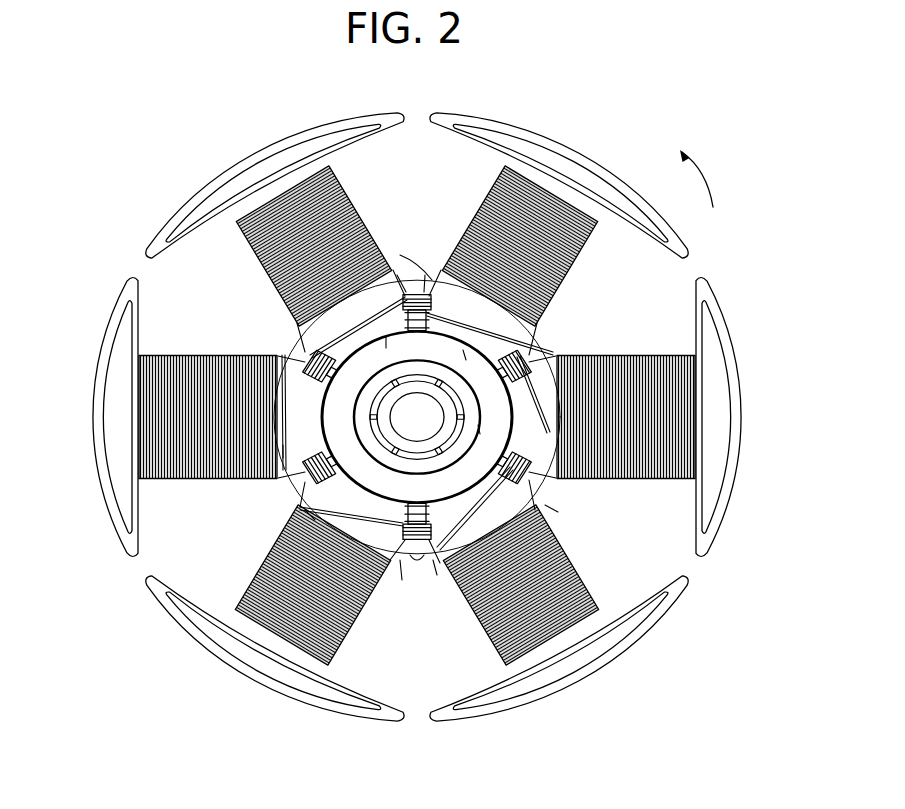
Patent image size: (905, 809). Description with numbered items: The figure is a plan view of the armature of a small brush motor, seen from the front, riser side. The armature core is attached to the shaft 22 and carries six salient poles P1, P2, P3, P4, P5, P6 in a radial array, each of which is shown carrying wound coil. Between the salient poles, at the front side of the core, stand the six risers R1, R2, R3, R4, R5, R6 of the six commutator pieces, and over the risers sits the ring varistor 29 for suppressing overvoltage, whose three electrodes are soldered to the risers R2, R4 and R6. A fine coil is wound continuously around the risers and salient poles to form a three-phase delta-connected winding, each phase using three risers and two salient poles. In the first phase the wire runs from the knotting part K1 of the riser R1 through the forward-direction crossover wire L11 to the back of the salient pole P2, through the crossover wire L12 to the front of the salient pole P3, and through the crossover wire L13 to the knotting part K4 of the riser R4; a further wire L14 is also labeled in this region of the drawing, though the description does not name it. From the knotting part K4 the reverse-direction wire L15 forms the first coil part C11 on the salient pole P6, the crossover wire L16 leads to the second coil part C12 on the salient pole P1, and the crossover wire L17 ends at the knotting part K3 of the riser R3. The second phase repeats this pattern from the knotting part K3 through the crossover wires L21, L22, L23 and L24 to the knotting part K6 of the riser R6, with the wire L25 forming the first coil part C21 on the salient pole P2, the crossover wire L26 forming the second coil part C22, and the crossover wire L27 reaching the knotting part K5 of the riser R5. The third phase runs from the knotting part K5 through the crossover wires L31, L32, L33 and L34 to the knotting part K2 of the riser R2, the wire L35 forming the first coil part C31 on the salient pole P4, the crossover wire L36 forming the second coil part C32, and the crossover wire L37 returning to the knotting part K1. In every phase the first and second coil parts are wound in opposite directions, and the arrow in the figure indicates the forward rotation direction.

The shaft 22 is at (405, 430).
The ring varistor 29 is at (433, 278).
The salient pole P1 is at (578, 690).
The salient pole P2 is at (263, 150).
The salient pole P3 is at (93, 416).
The salient pole P4 is at (752, 414).
The salient pole P5 is at (598, 150).
The salient pole P6 is at (268, 692).
The first coil part C11 is at (343, 653).
The second coil part C12 is at (592, 586).
The first coil part C21 is at (340, 170).
The second coil part C22 is at (162, 585).
The first coil part C31 is at (700, 375).
The second coil part C32 is at (606, 240).
The knotting part K1 is at (403, 318).
The knotting part K2 is at (516, 360).
The knotting part K3 is at (519, 459).
The knotting part K4 is at (418, 508).
The knotting part K5 is at (324, 481).
The knotting part K6 is at (319, 382).
The riser R1 is at (416, 290).
The riser R2 is at (560, 345).
The riser R3 is at (560, 505).
The riser R4 is at (420, 578).
The riser R5 is at (293, 503).
The riser R6 is at (305, 345).
The crossover wire L11 is at (398, 275).
The crossover wire L12 is at (296, 356).
The crossover wire L13 is at (297, 492).
The lead wire L14 is at (401, 578).
The crossover wire L15 is at (351, 499).
The crossover wire L16 is at (425, 535).
The crossover wire L17 is at (483, 508).
The crossover wire L21 is at (557, 482).
The crossover wire L22 is at (558, 362).
The crossover wire L23 is at (424, 275).
The crossover wire L24 is at (296, 326).
The crossover wire L25 is at (401, 350).
The crossover wire L26 is at (270, 352).
The crossover wire L27 is at (295, 453).
The crossover wire L31 is at (300, 513).
The crossover wire L32 is at (438, 570).
The crossover wire L33 is at (567, 513).
The crossover wire L34 is at (560, 376).
The crossover wire L35 is at (495, 430).
The crossover wire L36 is at (558, 322).
The crossover wire L37 is at (478, 367).